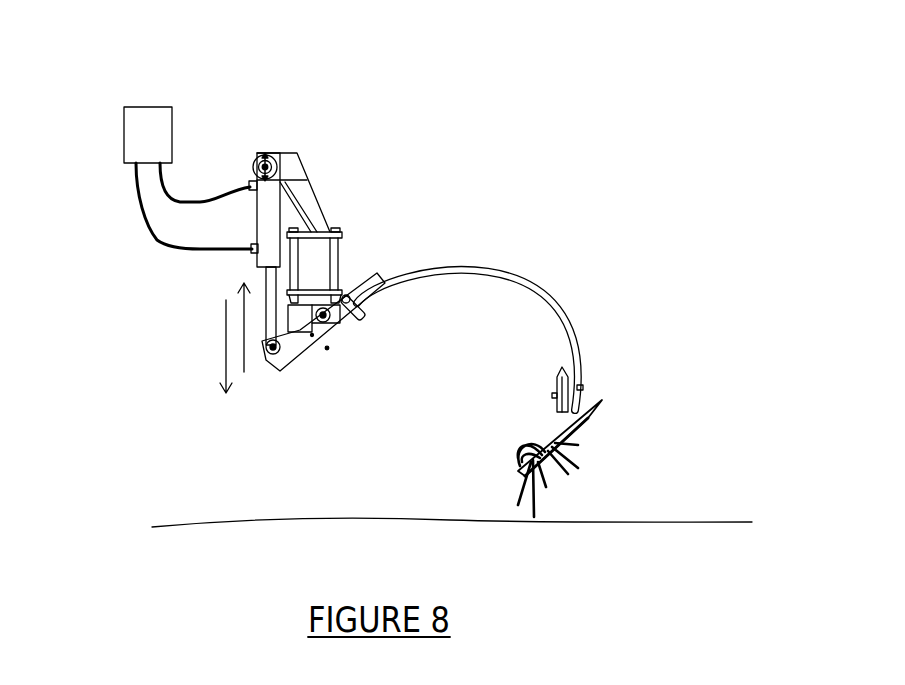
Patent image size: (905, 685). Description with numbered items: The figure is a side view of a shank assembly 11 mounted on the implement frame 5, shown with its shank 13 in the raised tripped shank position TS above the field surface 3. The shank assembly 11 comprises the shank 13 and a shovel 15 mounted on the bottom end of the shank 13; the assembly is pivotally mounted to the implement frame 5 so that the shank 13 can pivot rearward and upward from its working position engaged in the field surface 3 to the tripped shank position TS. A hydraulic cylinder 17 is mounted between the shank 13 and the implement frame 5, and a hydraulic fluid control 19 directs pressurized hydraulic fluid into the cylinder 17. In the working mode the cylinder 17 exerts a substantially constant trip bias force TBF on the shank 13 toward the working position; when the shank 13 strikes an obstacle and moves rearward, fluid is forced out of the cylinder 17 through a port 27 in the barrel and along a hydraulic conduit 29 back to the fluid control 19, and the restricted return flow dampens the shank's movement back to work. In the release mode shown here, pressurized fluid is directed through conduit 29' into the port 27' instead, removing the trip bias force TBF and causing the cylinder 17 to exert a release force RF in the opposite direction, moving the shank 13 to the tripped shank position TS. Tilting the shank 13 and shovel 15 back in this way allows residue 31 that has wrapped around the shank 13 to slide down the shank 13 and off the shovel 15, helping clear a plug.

The field surface 3 is at (210, 521).
The implement frame 5 is at (340, 250).
The shank assembly 11 is at (456, 124).
The shank 13 is at (513, 266).
The shovel 15 is at (586, 418).
The hydraulic cylinder 17 is at (260, 267).
The hydraulic fluid control 19 is at (123, 123).
The port 27 is at (166, 272).
The port 27' is at (262, 146).
The hydraulic conduit 29 is at (139, 206).
The conduit 29' is at (213, 129).
The residue 31 is at (517, 474).
The release force RF is at (224, 345).
The trip bias force TBF is at (246, 345).
The tripped shank position TS is at (570, 340).